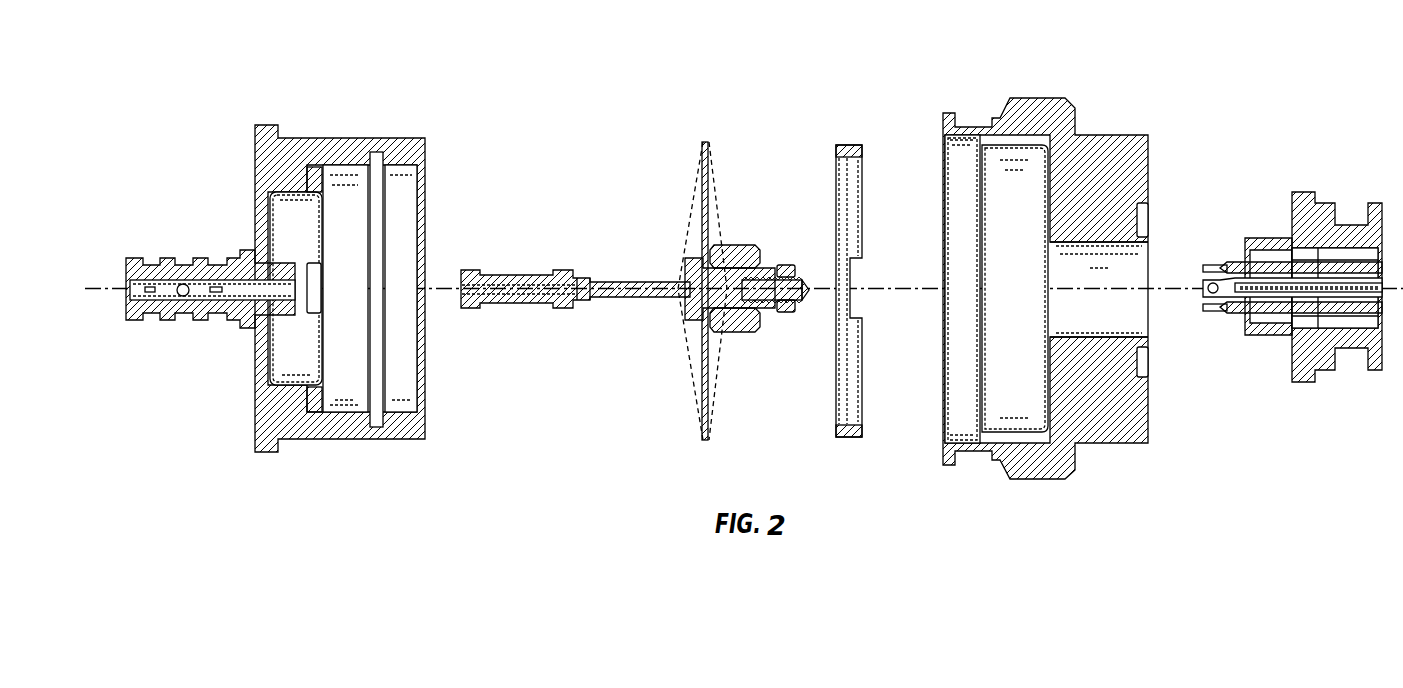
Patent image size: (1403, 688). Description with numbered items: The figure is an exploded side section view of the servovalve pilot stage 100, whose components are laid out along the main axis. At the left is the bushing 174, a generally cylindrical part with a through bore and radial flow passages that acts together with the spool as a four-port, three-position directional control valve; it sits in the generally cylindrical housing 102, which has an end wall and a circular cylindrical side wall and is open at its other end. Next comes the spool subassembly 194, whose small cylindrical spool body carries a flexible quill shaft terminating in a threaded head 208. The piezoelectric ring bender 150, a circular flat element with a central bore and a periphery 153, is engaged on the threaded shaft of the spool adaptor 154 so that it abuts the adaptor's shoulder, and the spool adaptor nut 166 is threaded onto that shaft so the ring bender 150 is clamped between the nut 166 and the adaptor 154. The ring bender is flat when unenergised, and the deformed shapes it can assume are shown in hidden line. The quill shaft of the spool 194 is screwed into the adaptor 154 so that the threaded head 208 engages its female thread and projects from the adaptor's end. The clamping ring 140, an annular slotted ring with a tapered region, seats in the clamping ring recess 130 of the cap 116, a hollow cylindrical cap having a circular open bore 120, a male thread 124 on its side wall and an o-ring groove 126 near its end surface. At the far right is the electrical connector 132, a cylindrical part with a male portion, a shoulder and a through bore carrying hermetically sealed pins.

The servovalve pilot stage 100 is at (597, 50).
The housing 102 is at (361, 98).
The cap 116 is at (1113, 68).
The circular open bore 120 is at (1102, 318).
The male thread 124 is at (1033, 457).
The o-ring groove 126 is at (972, 127).
The clamping ring recess 130 is at (963, 427).
The electrical connector 132 is at (1327, 178).
The clamping ring 140 is at (848, 113).
The piezoelectric ring bender 150 is at (702, 381).
The periphery 153 is at (705, 142).
The spool adaptor 154 is at (686, 262).
The spool adaptor nut 166 is at (738, 332).
The bushing 174 is at (181, 225).
The spool subassembly 194 is at (606, 300).
The threaded head 208 is at (790, 268).